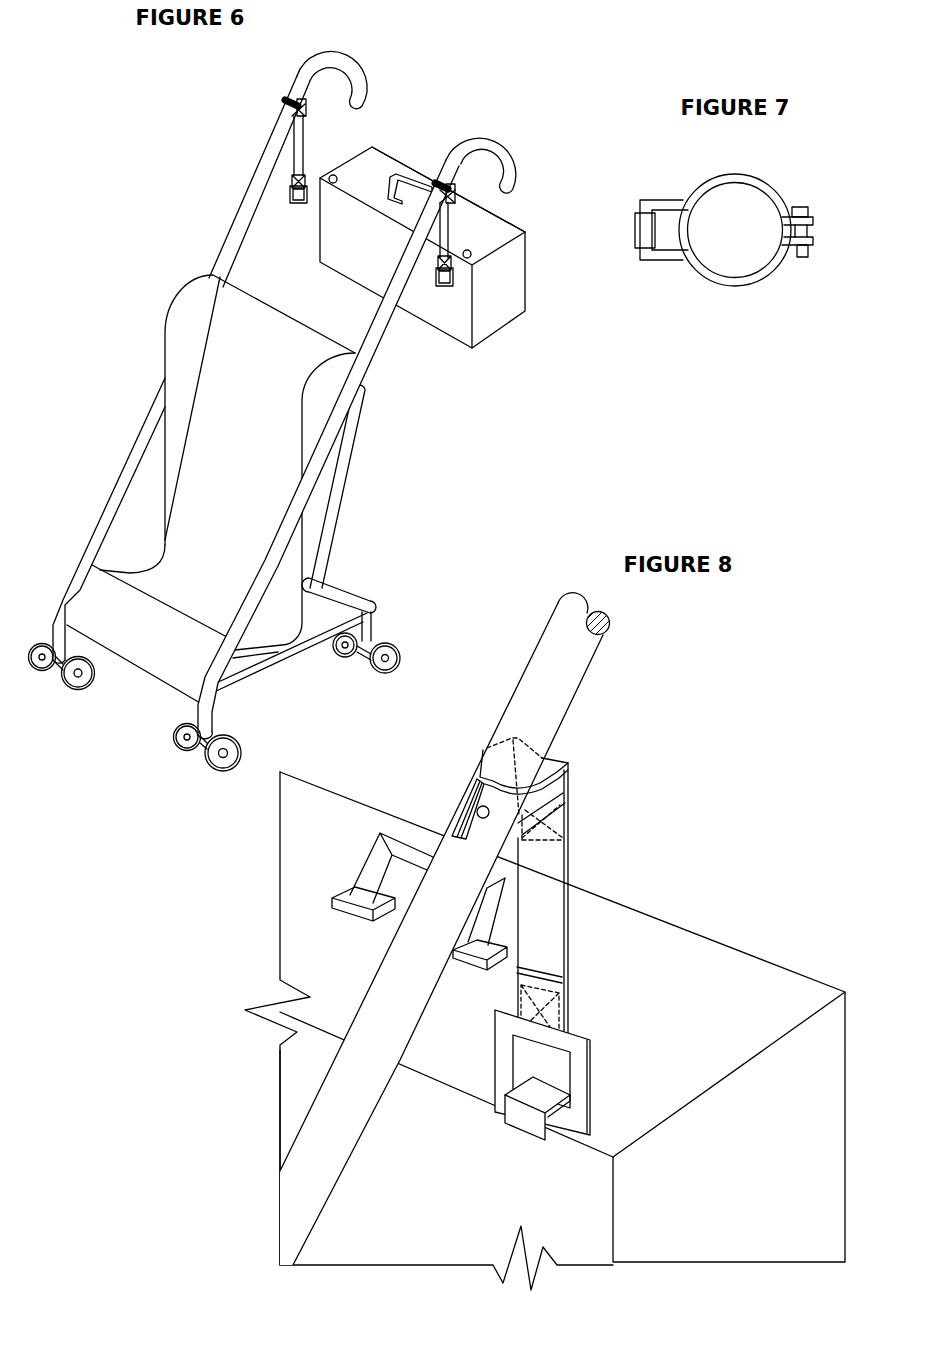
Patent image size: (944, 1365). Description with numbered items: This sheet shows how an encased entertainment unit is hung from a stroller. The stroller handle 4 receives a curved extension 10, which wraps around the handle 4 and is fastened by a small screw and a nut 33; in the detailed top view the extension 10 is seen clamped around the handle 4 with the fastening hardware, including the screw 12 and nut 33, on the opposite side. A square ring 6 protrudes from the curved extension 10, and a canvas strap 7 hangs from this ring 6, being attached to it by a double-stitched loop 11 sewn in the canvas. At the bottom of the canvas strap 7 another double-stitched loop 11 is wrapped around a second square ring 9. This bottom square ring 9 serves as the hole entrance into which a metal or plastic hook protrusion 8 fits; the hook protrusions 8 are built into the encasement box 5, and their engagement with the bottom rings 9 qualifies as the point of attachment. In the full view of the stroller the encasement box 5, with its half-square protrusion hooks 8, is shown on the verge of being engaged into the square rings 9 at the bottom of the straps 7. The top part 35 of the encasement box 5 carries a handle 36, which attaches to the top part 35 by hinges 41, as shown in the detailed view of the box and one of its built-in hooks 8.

In FIG. 6, the stroller handle 4 is at (294, 80).
In FIG. 8, the stroller handle 4 is at (370, 983).
In FIG. 6, the encasement box 5 is at (527, 262).
In FIG. 8, the encasement box 5 is at (730, 947).
In FIG. 6, the square ring 6 is at (304, 104).
In FIG. 7, the square ring 6 is at (665, 200).
In FIG. 8, the square ring 6 is at (568, 765).
In FIG. 6, the canvas strap 7 is at (297, 152).
In FIG. 8, the canvas strap 7 is at (557, 940).
In FIG. 6, the hook protrusion 8 is at (337, 178).
In FIG. 8, the hook protrusion 8 is at (520, 1141).
In FIG. 6, the square ring 9 is at (299, 204).
In FIG. 8, the square ring 9 is at (590, 1052).
In FIG. 6, the curved extension 10 is at (282, 104).
In FIG. 7, the curved extension 10 is at (716, 284).
In FIG. 8, the curved extension 10 is at (487, 752).
In FIG. 6, the double-stitched loop 11 is at (298, 178).
In FIG. 7, the double-stitched loop 11 is at (634, 216).
In FIG. 8, the double-stitched loop 11 is at (553, 812).
In FIG. 7, the bolt 12 is at (801, 207).
In FIG. 8, the bolt 12 is at (489, 817).
In FIG. 7, the nut 33 is at (808, 258).
In FIG. 8, the nut 33 is at (463, 800).
In FIG. 6, the top part of the encasement box 35 is at (510, 223).
In FIG. 8, the top part of the encasement box 35 is at (445, 1090).
In FIG. 8, the handle 36 is at (445, 832).
In FIG. 8, the hinges 41 is at (343, 890).